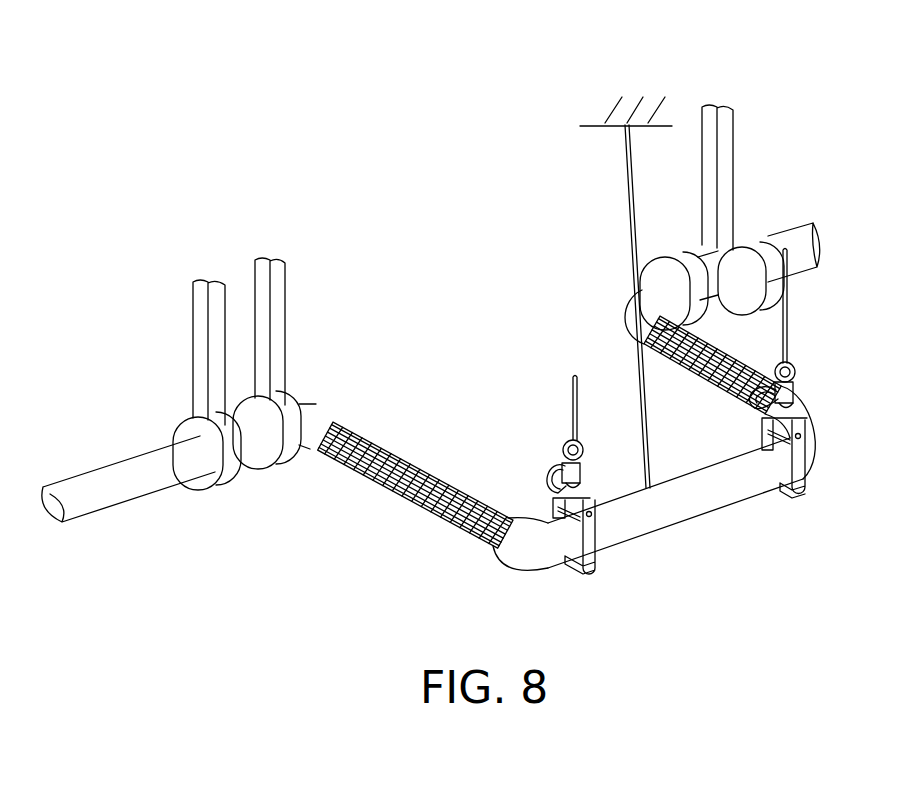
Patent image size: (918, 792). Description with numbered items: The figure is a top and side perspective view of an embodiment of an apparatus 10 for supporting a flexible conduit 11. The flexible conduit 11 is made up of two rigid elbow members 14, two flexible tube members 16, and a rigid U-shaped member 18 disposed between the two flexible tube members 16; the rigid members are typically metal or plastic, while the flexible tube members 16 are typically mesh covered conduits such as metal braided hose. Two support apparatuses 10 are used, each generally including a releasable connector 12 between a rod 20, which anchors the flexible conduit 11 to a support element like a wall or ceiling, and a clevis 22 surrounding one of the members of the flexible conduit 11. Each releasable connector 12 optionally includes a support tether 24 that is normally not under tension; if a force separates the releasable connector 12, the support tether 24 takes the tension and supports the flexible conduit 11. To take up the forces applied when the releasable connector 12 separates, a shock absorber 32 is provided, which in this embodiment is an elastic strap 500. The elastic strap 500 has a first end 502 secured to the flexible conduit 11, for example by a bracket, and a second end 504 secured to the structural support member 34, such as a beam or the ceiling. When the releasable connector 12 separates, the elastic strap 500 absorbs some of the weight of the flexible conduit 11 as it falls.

The apparatus 10 is at (832, 510).
The flexible conduit 11 is at (458, 237).
The releasable connector 12 is at (580, 470).
The rigid elbow member 14 is at (313, 412).
The flexible tube member 16 is at (397, 500).
The rigid U-shaped member 18 is at (520, 547).
The rod 20 is at (578, 385).
The clevis 22 is at (597, 507).
The support tether 24 is at (543, 477).
The shock absorber 32 is at (610, 174).
The structural support member 34 is at (678, 109).
The elastic strap 500 is at (635, 190).
The first end 502 is at (668, 503).
The second end 504 is at (622, 150).